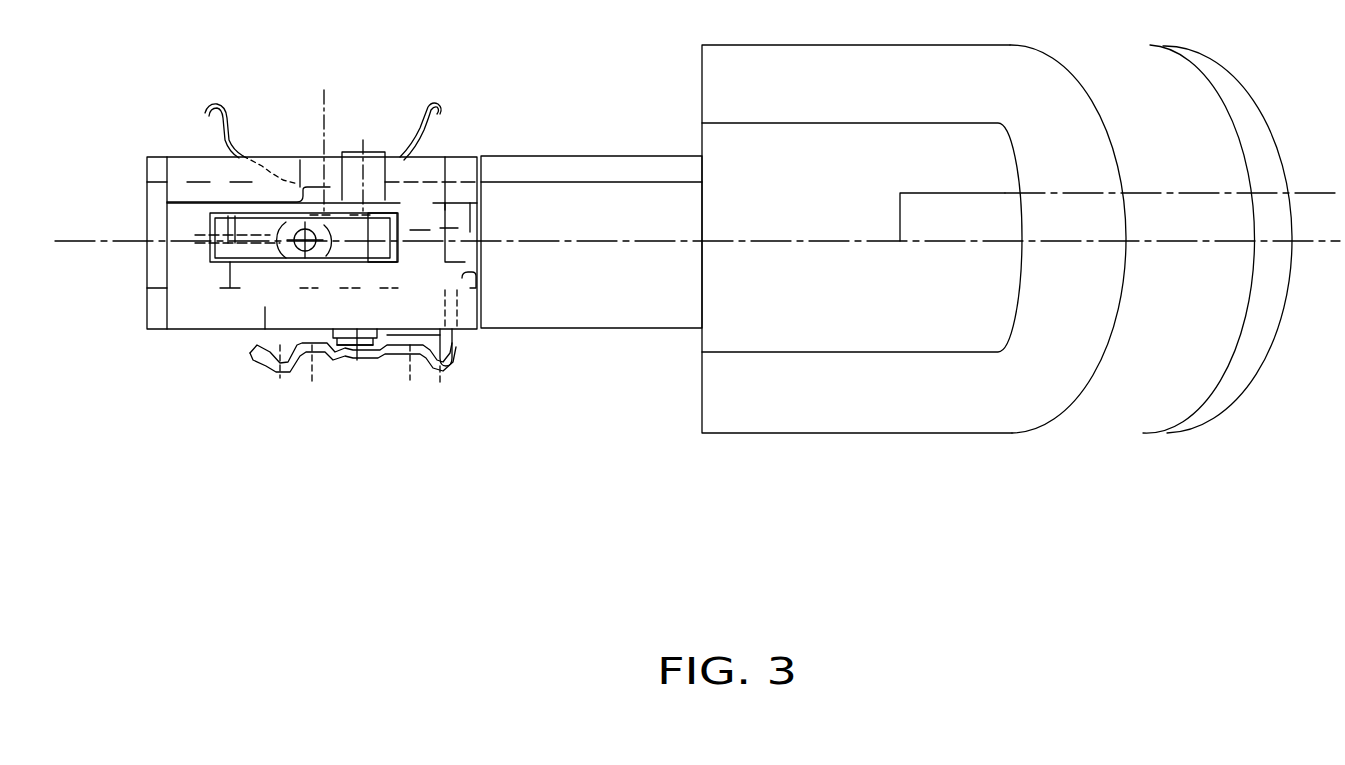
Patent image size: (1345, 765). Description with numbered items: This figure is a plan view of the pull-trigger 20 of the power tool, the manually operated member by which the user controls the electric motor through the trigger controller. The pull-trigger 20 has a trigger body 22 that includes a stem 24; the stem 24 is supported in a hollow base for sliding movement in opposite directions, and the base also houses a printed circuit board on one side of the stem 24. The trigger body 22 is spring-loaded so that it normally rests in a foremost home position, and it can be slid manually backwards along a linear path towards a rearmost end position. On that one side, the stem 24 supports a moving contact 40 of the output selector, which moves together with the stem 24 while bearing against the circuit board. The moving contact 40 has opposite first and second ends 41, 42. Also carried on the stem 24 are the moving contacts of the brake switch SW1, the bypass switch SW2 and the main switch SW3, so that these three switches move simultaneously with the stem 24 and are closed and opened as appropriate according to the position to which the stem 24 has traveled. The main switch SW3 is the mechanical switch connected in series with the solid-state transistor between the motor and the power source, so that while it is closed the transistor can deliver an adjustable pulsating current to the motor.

The pull-trigger 20 is at (893, 500).
The trigger body 22 is at (1002, 410).
The stem 24 is at (561, 312).
The moving contact 40 is at (397, 103).
The first end 41 is at (437, 104).
The second end 42 is at (213, 102).
The brake switch SW1 is at (260, 257).
The bypass switch SW2 is at (342, 357).
The main switch SW3 is at (403, 433).